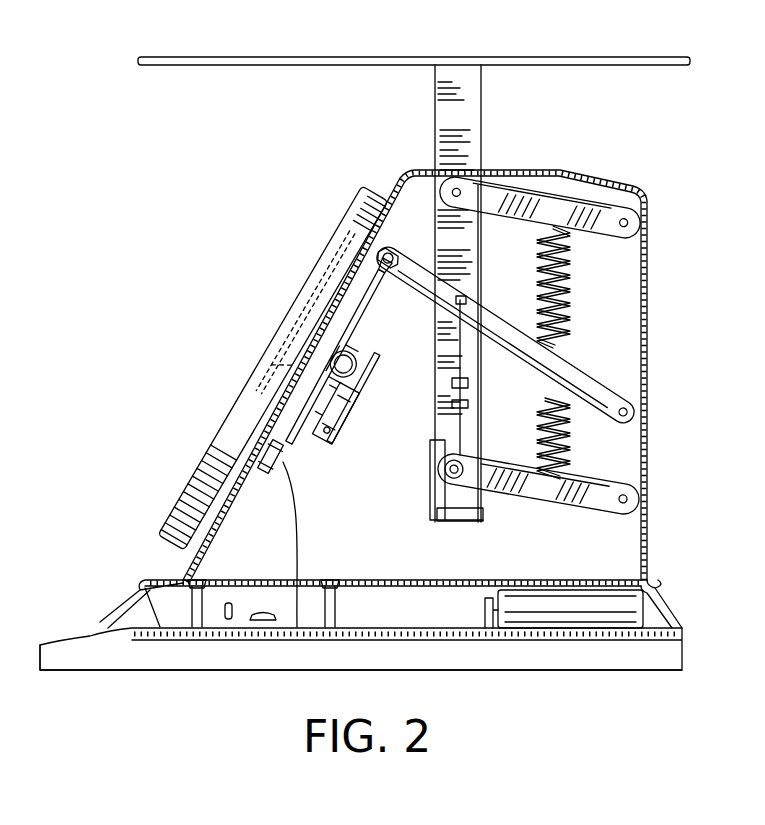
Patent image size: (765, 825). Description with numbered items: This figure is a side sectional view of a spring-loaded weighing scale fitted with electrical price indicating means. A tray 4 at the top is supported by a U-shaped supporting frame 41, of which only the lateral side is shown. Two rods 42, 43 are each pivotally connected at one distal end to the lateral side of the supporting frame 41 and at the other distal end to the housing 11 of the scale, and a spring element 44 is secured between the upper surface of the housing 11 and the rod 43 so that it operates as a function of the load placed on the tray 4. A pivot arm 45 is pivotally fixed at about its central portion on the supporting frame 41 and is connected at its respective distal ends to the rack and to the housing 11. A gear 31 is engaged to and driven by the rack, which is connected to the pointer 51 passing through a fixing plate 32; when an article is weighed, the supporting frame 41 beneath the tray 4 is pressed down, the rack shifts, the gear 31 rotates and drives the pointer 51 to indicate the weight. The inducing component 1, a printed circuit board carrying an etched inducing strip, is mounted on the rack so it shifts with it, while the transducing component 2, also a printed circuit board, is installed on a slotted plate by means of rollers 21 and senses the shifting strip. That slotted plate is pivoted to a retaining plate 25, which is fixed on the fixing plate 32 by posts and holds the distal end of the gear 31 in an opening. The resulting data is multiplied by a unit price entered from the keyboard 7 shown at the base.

The inducing component 1 is at (247, 353).
The transducing component 2 is at (275, 497).
The tray 4 is at (233, 57).
The keyboard 7 is at (57, 652).
The housing 11 is at (620, 184).
The rollers 21 is at (268, 458).
The retaining plate 25 is at (335, 430).
The gear 31 is at (340, 362).
The fixing plate 32 is at (335, 300).
The supporting frame 41 is at (472, 80).
The rod 42 is at (480, 185).
The rod 43 is at (615, 510).
The spring element 44 is at (574, 288).
The pivot arm 45 is at (585, 382).
The pointer 51 is at (258, 364).